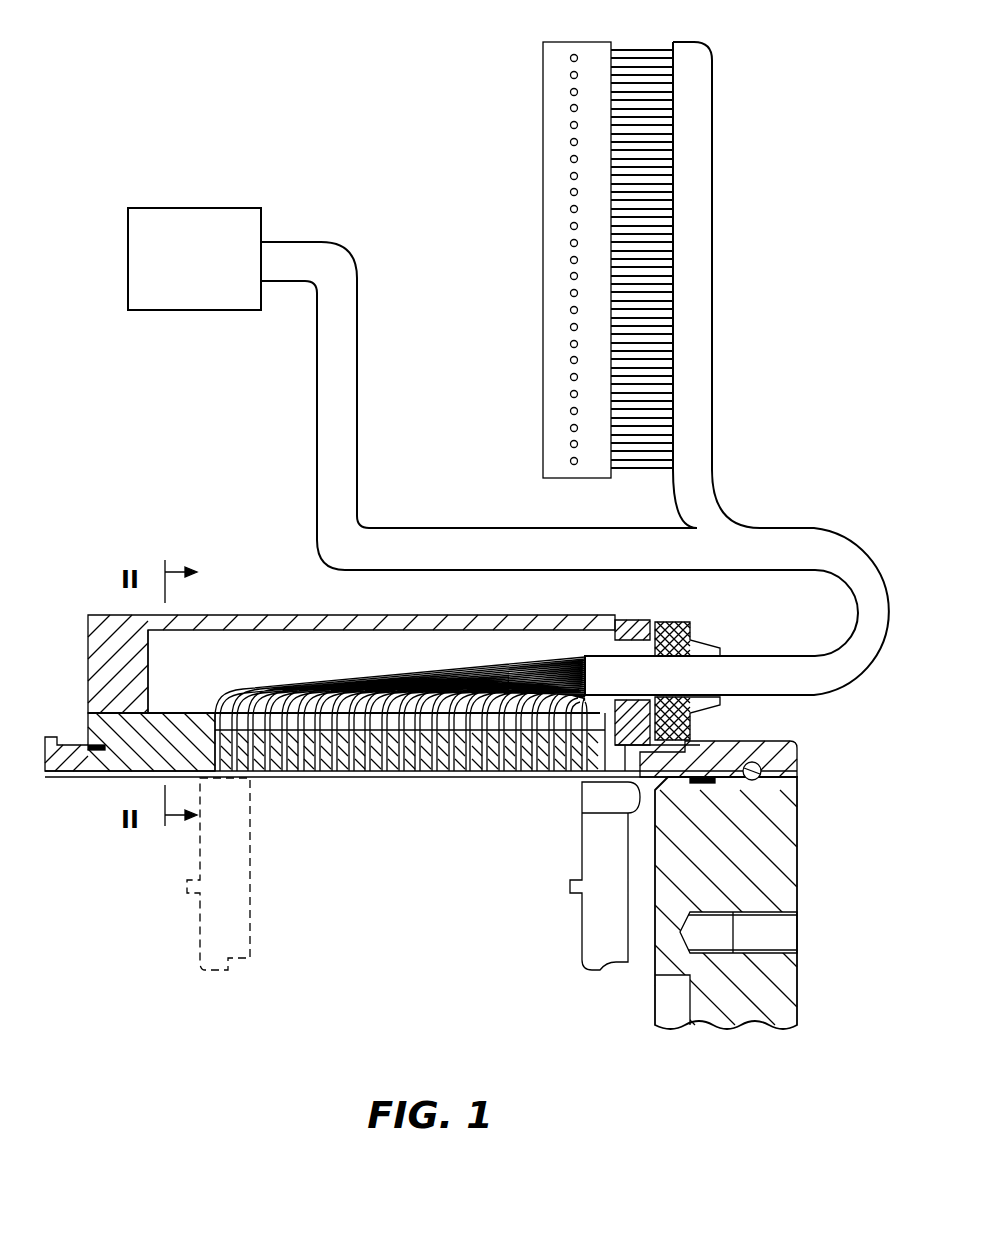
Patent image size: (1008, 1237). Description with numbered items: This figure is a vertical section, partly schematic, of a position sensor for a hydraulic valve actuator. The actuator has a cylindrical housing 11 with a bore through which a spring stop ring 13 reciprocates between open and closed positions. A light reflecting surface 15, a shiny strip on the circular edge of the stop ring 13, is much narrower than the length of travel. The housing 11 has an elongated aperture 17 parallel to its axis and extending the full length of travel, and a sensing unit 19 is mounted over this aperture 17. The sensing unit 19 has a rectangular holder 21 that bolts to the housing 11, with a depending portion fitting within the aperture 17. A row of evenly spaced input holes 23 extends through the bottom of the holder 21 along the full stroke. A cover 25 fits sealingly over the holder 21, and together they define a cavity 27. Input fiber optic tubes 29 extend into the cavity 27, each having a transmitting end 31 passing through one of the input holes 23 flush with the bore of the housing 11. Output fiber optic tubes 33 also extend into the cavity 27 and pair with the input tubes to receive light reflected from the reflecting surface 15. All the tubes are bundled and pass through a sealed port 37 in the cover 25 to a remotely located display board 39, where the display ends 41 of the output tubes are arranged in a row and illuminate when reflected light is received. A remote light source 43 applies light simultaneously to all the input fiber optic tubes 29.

The housing 11 is at (793, 746).
The spring stop ring 13 is at (583, 925).
The light reflecting surface 15 is at (636, 796).
The aperture 17 is at (641, 746).
The sensing unit 19 is at (713, 616).
The holder 21 is at (118, 758).
The input holes 23 is at (213, 733).
The cover 25 is at (101, 613).
The cavity 27 is at (150, 639).
The input fiber optic tubes 29 is at (433, 769).
The transmitting end 31 is at (283, 779).
The output fiber optic tubes 33 is at (661, 182).
The sealed port 37 is at (613, 663).
The display board 39 is at (543, 120).
The display ends 41 is at (571, 144).
The light source 43 is at (136, 239).